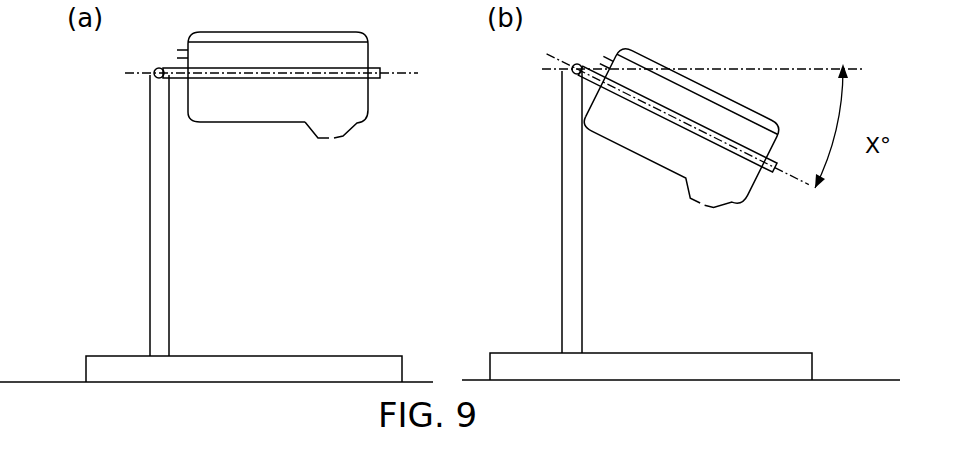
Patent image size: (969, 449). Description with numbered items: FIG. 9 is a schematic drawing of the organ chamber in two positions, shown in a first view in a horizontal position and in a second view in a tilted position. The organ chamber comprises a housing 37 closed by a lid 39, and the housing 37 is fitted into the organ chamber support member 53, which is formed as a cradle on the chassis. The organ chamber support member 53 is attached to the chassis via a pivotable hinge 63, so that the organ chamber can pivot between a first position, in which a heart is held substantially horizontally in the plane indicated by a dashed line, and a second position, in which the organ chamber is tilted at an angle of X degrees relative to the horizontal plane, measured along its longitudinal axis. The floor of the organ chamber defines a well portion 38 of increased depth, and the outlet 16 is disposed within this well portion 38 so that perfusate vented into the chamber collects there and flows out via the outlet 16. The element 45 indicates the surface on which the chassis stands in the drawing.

The outlet 16 is at (333, 140).
The housing 37 is at (247, 124).
The well portion 38 is at (344, 135).
The lid 39 is at (222, 32).
The installation surface 45 is at (28, 378).
The organ chamber support member 53 is at (230, 78).
The pivotable hinge 63 is at (576, 74).